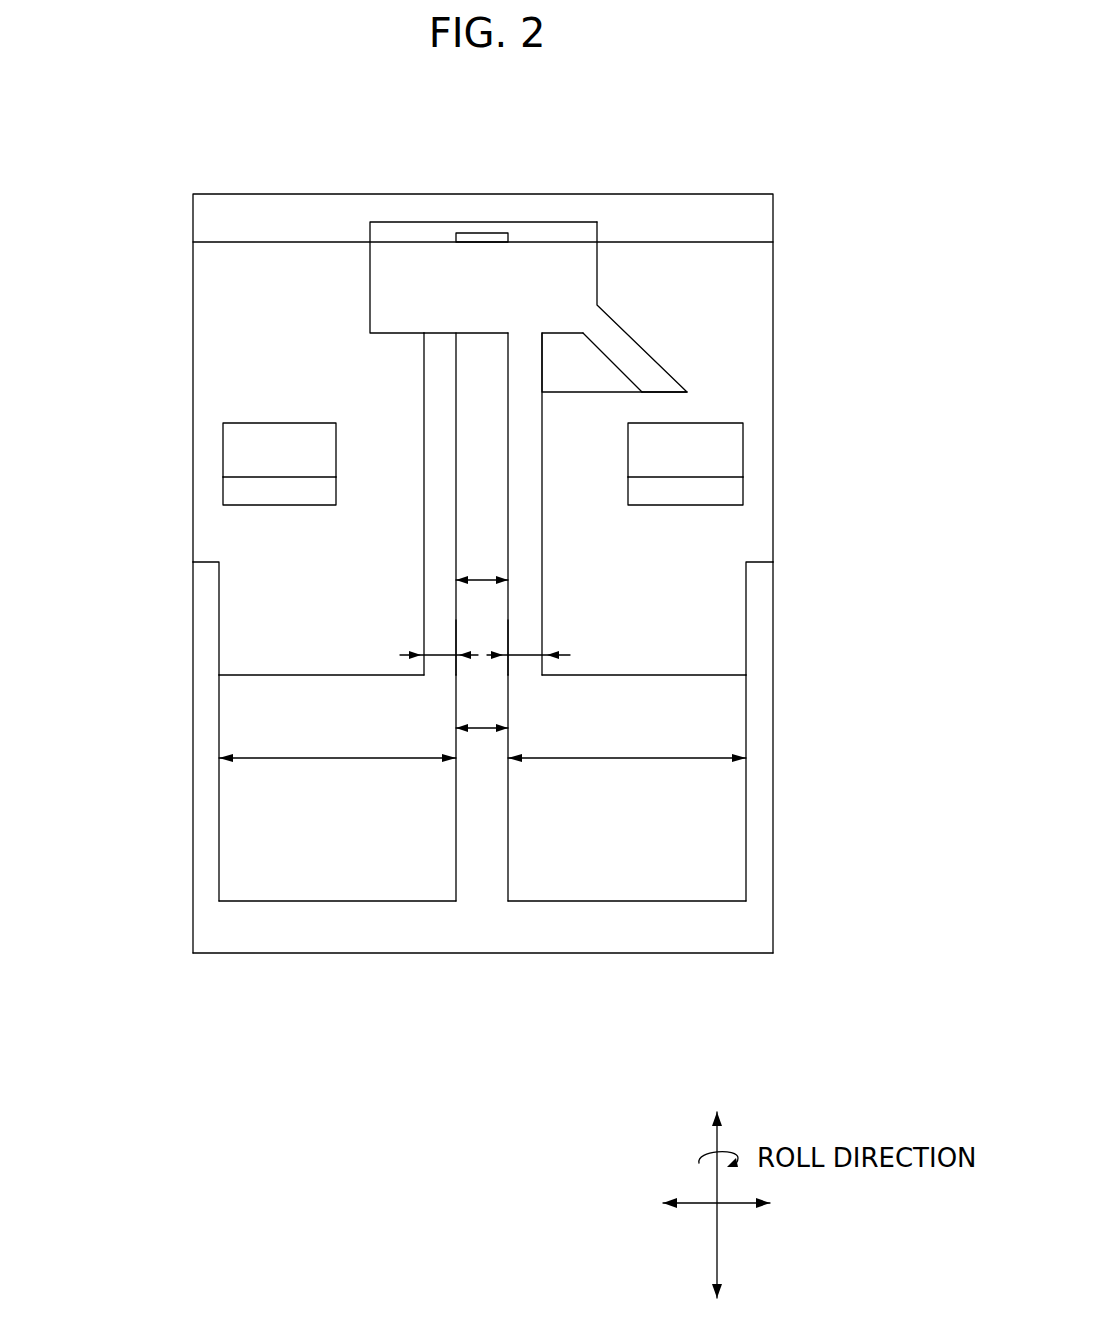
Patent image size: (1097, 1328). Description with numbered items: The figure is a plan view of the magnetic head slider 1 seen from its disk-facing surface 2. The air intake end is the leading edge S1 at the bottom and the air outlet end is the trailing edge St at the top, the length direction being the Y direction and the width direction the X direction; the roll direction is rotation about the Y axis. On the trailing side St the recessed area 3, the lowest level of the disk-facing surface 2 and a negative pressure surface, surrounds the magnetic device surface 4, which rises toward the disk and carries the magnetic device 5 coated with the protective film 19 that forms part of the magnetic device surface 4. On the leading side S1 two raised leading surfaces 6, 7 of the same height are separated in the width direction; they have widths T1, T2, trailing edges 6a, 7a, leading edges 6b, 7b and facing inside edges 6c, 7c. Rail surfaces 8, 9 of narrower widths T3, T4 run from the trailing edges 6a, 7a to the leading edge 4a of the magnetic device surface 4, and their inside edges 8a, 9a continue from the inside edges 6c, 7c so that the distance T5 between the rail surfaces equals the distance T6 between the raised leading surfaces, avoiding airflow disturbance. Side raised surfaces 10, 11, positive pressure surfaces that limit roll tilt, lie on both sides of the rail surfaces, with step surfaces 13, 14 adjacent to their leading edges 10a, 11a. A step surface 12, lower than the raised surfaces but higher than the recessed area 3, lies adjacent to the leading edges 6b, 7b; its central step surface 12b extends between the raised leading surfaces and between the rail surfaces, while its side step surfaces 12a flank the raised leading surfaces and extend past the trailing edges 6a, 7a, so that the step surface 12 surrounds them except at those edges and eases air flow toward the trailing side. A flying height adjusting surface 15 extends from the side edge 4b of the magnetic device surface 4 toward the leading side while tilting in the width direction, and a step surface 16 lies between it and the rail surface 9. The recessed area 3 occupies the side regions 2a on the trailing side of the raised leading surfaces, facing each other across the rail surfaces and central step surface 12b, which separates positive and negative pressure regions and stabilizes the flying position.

The magnetic head slider 1 is at (800, 423).
The disk-facing surface 2 is at (690, 557).
The side regions 2a is at (300, 573).
The recessed area 3 is at (748, 300).
The magnetic device surface 4 is at (562, 252).
The leading edge of the magnetic device surface 4a is at (477, 333).
The side edge of the magnetic device surface 4b is at (597, 268).
The magnetic device 5 is at (491, 236).
The raised leading surface 6 is at (290, 877).
The trailing edge of raised leading surface 6 6a is at (300, 676).
The leading edge of raised leading surface 6 6b is at (351, 903).
The inside edge of raised leading surface 6 6c is at (456, 792).
The raised leading surface 7 is at (670, 877).
The trailing edge of raised leading surface 7 7a is at (682, 676).
The leading edge of raised leading surface 7 7b is at (620, 903).
The inside edge of raised leading surface 7 7c is at (508, 792).
The rail surface 8 is at (440, 545).
The inside edge of rail surface 8 8a is at (456, 622).
The rail surface 9 is at (523, 570).
The inside edge of rail surface 9 9a is at (508, 627).
The side raised surface 10 is at (243, 449).
The leading edge of side raised surface 10 10a is at (262, 480).
The side raised surface 11 is at (725, 452).
The leading edge of side raised surface 11 11a is at (718, 478).
The step surface 12 is at (480, 833).
The side step surfaces 12a is at (770, 816).
The central step surface 12b is at (465, 427).
The step surface 13 is at (233, 497).
The step surface 14 is at (730, 497).
The flying height adjusting surface 15 is at (633, 362).
The step surface 16 is at (593, 380).
The protective film 19 is at (285, 218).
The trailing edge St is at (552, 240).
The leading edge S1 is at (568, 953).
The width of raised leading surface 6 T1 is at (337, 775).
The width of raised leading surface 7 T2 is at (627, 775).
The width of rail surface 8 T3 is at (439, 660).
The width of rail surface 9 T4 is at (522, 660).
The distance between rail surfaces T5 is at (482, 596).
The distance between raised leading surfaces T6 is at (482, 745).
The X-direction X is at (730, 1204).
The Y-direction Y is at (716, 1189).